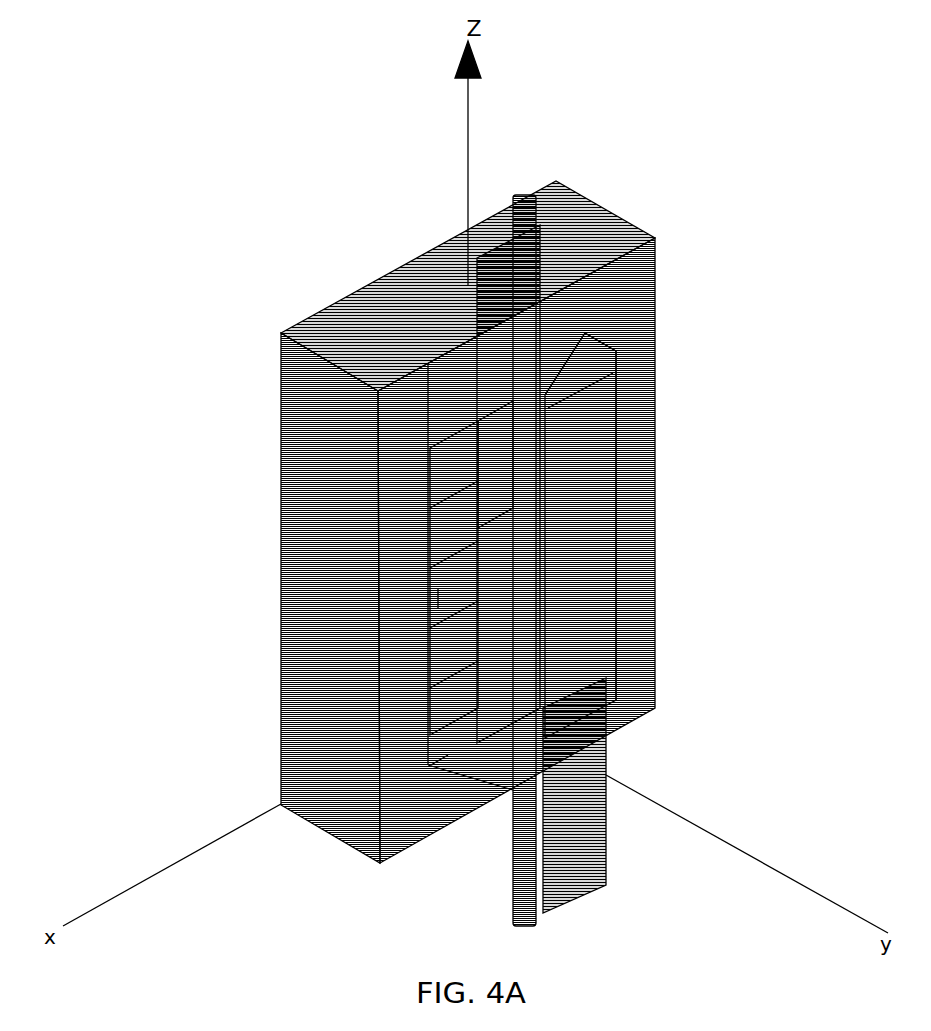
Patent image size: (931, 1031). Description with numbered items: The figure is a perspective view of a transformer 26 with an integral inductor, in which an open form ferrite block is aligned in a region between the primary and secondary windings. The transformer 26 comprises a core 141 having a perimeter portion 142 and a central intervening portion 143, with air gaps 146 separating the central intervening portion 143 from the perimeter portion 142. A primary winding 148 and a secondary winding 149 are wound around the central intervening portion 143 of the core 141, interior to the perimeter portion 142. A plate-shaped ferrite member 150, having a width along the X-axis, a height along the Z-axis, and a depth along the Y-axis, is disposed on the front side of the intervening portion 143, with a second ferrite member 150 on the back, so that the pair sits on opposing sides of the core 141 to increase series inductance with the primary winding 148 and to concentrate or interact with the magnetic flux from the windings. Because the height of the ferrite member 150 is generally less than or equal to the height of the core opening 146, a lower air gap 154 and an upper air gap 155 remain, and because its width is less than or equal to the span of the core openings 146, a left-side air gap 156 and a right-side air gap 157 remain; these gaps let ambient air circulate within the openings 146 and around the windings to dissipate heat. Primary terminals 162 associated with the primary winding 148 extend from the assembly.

The transformer 26 is at (485, 514).
The core 141 is at (305, 350).
The perimeter portion 142 is at (320, 568).
The central intervening portion 143 is at (550, 360).
The air gaps 146 is at (425, 762).
The primary winding 148 is at (425, 653).
The secondary winding 149 is at (603, 365).
The ferrite member 150 is at (592, 505).
The lower air gap 154 is at (606, 708).
The upper air gap 155 is at (470, 478).
The left-side air gap 156 is at (432, 588).
The right-side air gap 157 is at (612, 562).
The primary terminals 162 is at (517, 193).